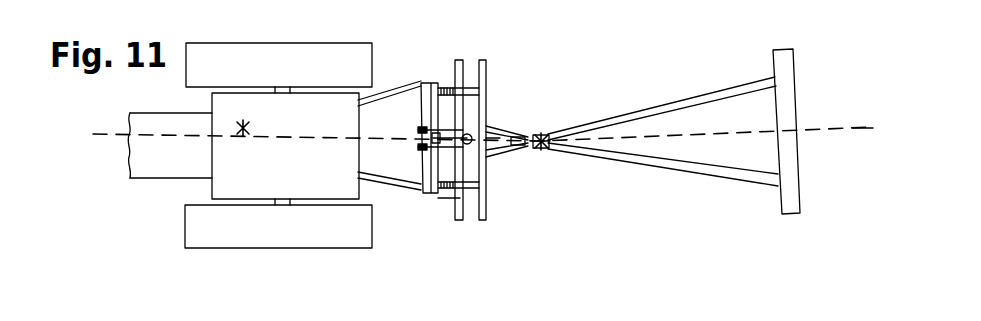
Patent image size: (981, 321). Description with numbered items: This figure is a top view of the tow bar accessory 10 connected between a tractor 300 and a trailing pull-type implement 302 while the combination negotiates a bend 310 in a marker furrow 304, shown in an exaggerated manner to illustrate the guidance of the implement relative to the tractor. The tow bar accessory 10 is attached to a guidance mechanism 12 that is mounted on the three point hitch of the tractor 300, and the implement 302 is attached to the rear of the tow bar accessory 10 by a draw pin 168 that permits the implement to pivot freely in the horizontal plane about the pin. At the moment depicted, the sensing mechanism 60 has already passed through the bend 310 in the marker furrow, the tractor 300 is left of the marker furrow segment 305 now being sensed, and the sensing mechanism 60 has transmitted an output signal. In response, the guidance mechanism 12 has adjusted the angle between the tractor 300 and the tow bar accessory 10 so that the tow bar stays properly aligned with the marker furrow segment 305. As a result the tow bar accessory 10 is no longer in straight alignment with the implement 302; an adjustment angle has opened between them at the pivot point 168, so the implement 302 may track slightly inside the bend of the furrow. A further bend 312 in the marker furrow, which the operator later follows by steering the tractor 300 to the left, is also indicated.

The tow bar accessory 10 is at (483, 67).
The guidance mechanism 12 is at (432, 82).
The sensing mechanism 60 is at (470, 127).
The draw pin 168 is at (540, 149).
The tractor 300 is at (343, 60).
The implement 302 is at (782, 68).
The marker furrow 304 is at (863, 127).
The marker furrow segment 305 is at (293, 108).
The bend 310 is at (555, 123).
The bend 312 is at (242, 123).